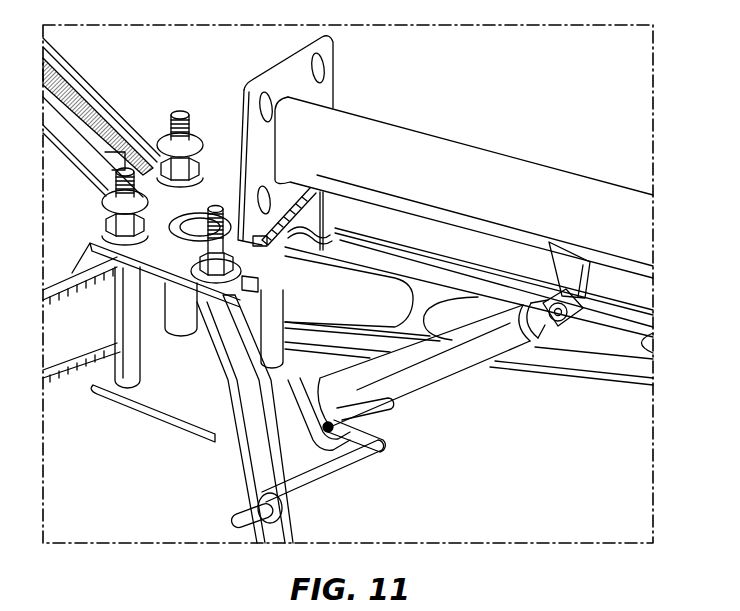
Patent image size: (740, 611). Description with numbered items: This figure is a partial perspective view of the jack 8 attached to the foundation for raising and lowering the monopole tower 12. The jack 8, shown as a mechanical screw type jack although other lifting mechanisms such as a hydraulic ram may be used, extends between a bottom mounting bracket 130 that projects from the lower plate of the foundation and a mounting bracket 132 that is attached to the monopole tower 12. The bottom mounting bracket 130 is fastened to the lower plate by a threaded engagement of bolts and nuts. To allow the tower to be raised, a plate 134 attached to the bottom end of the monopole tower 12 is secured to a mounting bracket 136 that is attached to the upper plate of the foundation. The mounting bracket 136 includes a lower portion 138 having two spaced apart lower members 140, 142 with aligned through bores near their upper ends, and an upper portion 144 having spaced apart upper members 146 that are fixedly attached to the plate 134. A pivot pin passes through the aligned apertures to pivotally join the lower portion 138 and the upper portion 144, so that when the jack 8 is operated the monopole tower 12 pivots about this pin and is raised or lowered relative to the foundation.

The jack 8 is at (453, 358).
The monopole tower 12 is at (583, 187).
The bottom mounting bracket 130 is at (313, 426).
The mounting bracket 132 is at (570, 265).
The plate 134 is at (318, 90).
The mounting bracket 136 is at (347, 207).
The lower portion 138 is at (276, 292).
The lower member 140 is at (253, 278).
The lower member 142 is at (258, 243).
The upper portion 144 is at (330, 226).
The upper members 146 is at (247, 240).